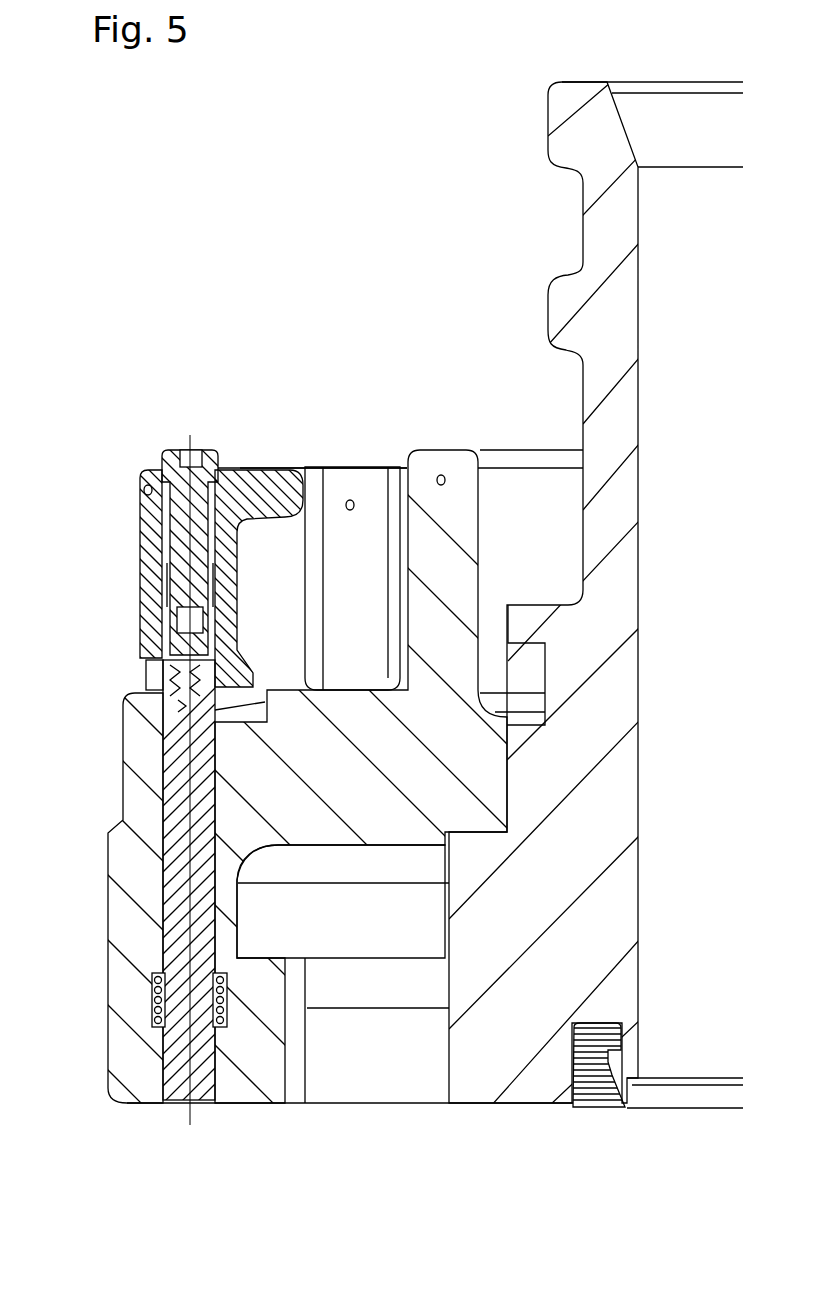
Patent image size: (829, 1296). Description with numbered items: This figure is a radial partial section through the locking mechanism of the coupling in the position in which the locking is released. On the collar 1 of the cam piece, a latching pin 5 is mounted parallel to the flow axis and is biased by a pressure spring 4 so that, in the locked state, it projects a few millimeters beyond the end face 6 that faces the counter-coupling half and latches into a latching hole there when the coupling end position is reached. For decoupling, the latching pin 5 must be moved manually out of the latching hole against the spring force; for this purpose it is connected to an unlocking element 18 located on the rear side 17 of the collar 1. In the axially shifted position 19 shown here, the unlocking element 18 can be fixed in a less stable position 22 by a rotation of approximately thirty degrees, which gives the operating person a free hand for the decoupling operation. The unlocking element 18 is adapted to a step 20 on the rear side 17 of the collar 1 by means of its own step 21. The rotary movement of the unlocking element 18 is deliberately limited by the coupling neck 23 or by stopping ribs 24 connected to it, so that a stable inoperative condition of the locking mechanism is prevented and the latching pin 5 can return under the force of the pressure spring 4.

The collar 1 is at (123, 822).
The pressure spring 4 is at (227, 995).
The latching pin 5 is at (194, 1100).
The end face 6 is at (265, 1105).
The rear side of the collar 17 is at (340, 690).
The unlocking element 18 is at (147, 488).
The axially shifted position 19 is at (262, 448).
The step 20 is at (178, 705).
The step 21 is at (146, 678).
The less stable position 22 is at (262, 448).
The coupling neck 23 is at (440, 478).
The stopping ribs 24 is at (350, 500).